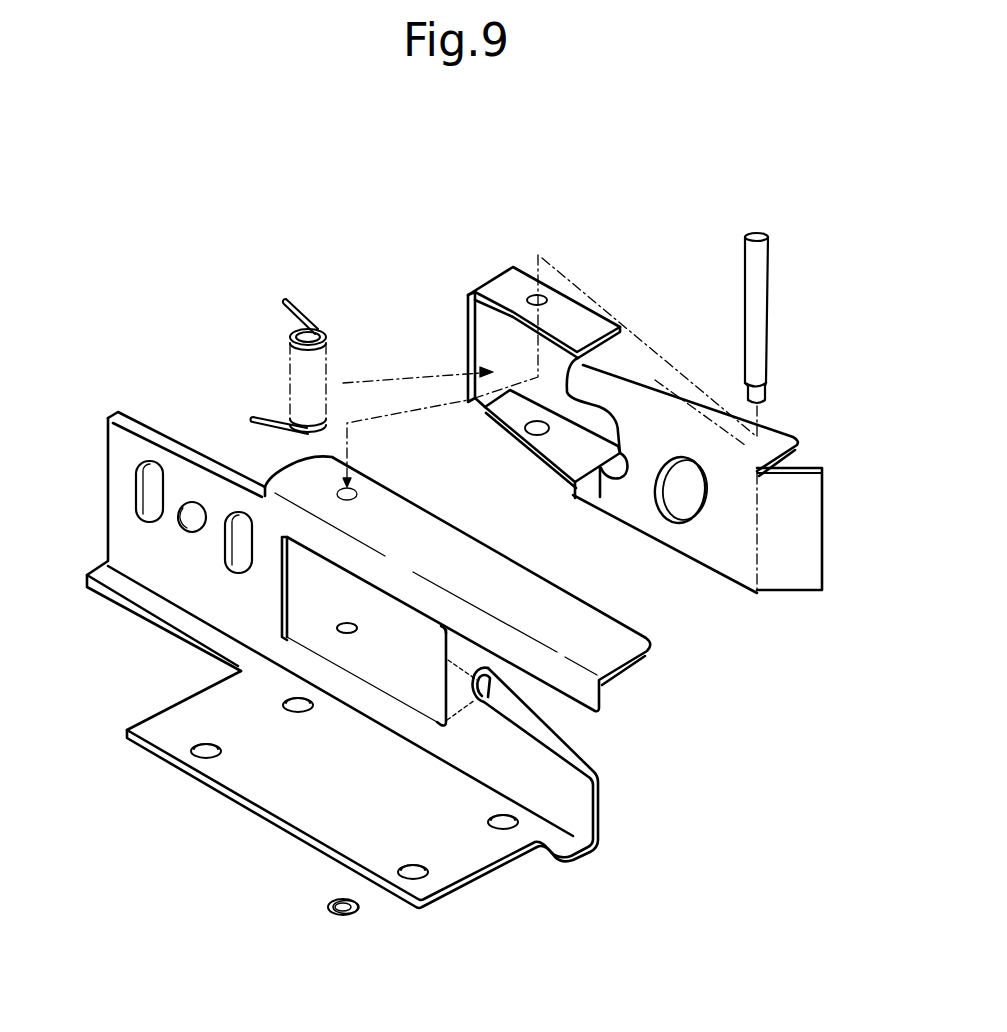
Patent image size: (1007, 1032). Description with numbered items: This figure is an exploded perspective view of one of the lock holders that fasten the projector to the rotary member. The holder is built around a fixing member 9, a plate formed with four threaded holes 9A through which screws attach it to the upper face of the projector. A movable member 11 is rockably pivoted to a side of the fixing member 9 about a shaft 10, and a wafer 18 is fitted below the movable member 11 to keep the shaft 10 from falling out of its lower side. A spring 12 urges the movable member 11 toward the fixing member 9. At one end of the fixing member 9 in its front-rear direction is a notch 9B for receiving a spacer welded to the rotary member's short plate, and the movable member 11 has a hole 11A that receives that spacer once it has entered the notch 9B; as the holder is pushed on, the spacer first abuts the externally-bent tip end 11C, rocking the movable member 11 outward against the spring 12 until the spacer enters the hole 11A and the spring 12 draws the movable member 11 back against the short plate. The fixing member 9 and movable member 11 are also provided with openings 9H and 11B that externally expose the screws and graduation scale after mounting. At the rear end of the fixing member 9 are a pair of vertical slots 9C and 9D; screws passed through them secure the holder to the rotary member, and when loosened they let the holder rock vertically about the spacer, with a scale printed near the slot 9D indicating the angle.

The fixing member 9 is at (577, 803).
The threaded holes 9A is at (222, 750).
The notch 9B is at (567, 704).
The vertical slot 9C is at (240, 547).
The vertical slot 9D is at (150, 494).
The opening 9H is at (335, 569).
The shaft 10 is at (763, 322).
The movable member 11 is at (632, 357).
The hole 11A is at (680, 497).
The opening 11B is at (603, 482).
The externally-bent tip end 11C is at (805, 545).
The spring 12 is at (297, 308).
The wafer 18 is at (355, 912).